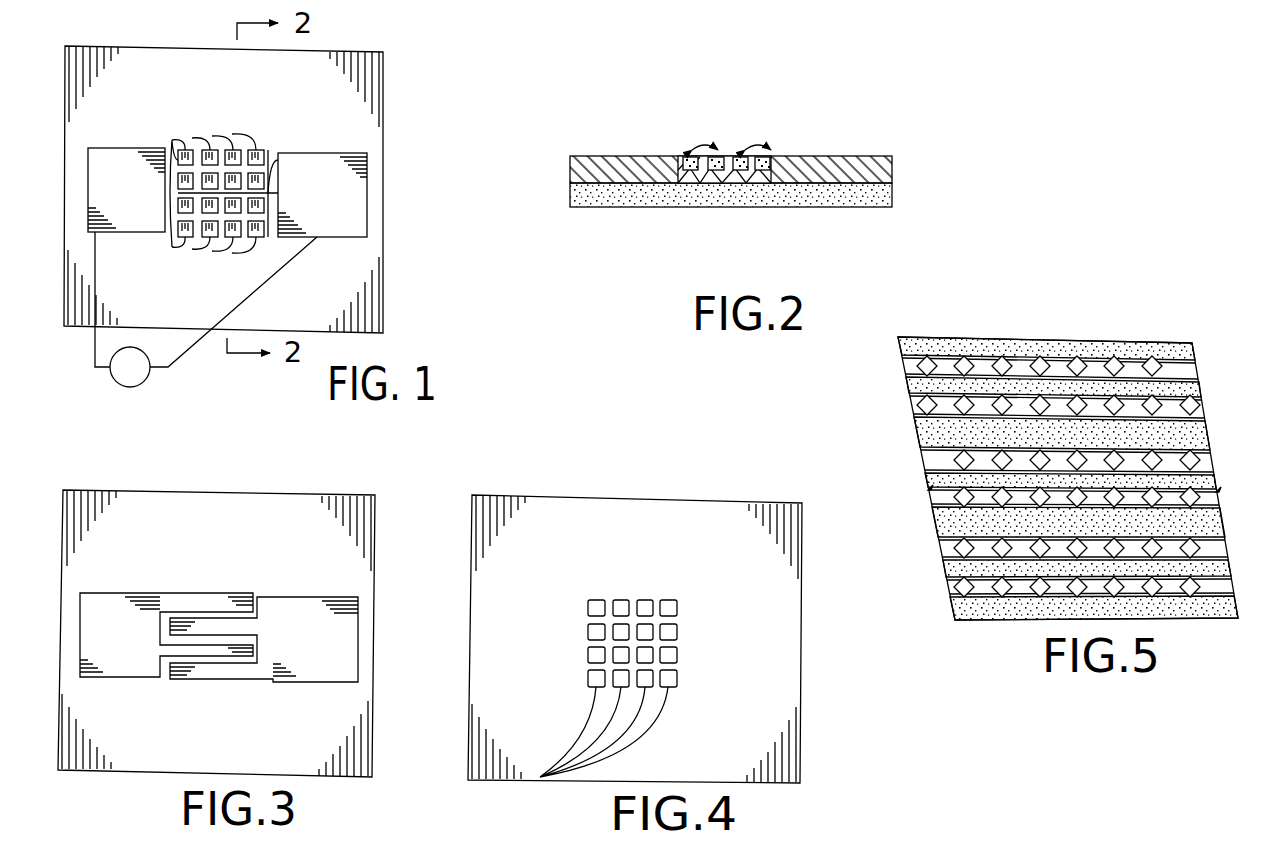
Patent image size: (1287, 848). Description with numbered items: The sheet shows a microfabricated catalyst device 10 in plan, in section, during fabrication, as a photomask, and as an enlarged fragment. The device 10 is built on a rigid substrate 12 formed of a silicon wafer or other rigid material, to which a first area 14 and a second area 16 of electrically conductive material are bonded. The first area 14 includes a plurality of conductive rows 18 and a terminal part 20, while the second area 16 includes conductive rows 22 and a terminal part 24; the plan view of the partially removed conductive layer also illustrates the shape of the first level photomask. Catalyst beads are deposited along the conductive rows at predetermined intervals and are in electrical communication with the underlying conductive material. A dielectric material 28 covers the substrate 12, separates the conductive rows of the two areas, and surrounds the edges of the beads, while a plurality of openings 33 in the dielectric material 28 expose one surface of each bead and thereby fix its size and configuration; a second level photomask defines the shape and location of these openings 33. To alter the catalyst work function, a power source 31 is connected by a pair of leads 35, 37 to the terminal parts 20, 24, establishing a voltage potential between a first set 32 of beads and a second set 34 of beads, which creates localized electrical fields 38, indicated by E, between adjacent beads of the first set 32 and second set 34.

In FIG. 1, the microfabricated catalyst device 10 is at (392, 312).
In FIG. 2, the microfabricated catalyst device 10 is at (930, 185).
In FIG. 5, the microfabricated catalyst device 10 is at (1052, 512).
In FIG. 2, the rigid substrate 12 is at (892, 204).
In FIG. 3, the first area of electrically conductive material 14 is at (117, 678).
In FIG. 2, the second area of electrically conductive material 16 is at (722, 185).
In FIG. 3, the second area of electrically conductive material 16 is at (312, 683).
In FIG. 5, the conductive rows 18 is at (1212, 425).
In FIG. 3, the conductive rows 18 is at (150, 647).
In FIG. 1, the terminal part 20 is at (113, 190).
In FIG. 2, the terminal part 20 is at (752, 185).
In FIG. 3, the terminal part 20 is at (115, 628).
In FIG. 5, the conductive rows 22 is at (1215, 487).
In FIG. 3, the conductive rows 22 is at (257, 672).
In FIG. 1, the terminal part 24 is at (340, 173).
In FIG. 3, the terminal part 24 is at (325, 632).
In FIG. 2, the dielectric material 28 is at (730, 185).
In FIG. 5, the dielectric material 28 is at (927, 425).
In FIG. 1, the power source 31 is at (117, 378).
In FIG. 1, the first set of beads 32 is at (230, 150).
In FIG. 2, the first set of beads 32 is at (738, 145).
In FIG. 5, the first set of beads 32 is at (1043, 366).
In FIG. 2, the openings 33 is at (680, 183).
In FIG. 4, the openings 33 is at (540, 777).
In FIG. 1, the second set of beads 34 is at (258, 192).
In FIG. 2, the second set of beads 34 is at (770, 157).
In FIG. 5, the second set of beads 34 is at (1012, 437).
In FIG. 1, the lead 35 is at (93, 338).
In FIG. 1, the lead 37 is at (267, 280).
In FIG. 1, the localized electrical fields 38 is at (200, 100).
In FIG. 2, the localized electrical fields 38 is at (700, 102).
In FIG. 5, the localized electrical fields 38 is at (1215, 585).